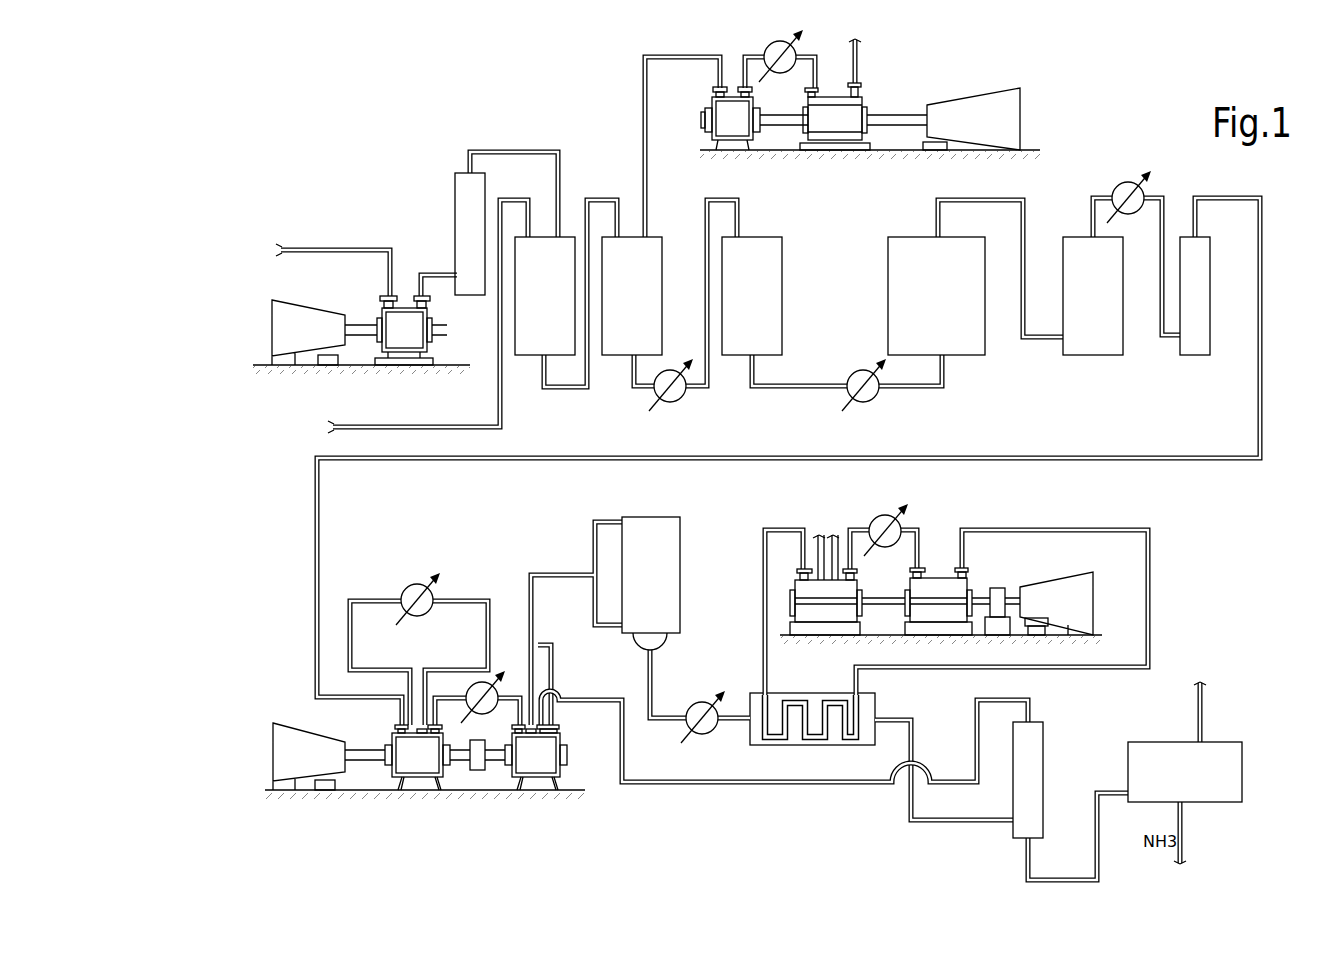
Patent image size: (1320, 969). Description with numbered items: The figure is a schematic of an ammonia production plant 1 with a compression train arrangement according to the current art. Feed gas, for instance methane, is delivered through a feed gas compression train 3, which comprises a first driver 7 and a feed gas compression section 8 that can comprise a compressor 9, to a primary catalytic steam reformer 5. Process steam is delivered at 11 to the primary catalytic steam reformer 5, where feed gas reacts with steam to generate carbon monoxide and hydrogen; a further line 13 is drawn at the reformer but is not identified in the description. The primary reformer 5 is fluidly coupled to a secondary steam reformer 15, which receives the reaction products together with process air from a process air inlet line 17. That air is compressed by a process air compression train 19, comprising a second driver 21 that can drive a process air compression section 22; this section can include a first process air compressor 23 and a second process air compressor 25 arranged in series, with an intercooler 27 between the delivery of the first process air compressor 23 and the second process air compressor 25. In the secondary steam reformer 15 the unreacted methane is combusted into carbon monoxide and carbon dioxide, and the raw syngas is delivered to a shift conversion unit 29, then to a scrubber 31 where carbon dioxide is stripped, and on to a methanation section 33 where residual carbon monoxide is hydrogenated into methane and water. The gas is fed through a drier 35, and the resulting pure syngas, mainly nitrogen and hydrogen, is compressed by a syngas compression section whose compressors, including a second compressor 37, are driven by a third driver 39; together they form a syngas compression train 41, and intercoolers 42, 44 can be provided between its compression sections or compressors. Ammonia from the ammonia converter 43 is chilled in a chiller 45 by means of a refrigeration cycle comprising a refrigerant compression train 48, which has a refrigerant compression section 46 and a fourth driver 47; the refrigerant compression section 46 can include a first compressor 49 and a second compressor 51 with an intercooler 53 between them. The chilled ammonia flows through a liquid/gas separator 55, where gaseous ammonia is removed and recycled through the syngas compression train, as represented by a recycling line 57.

The ammonia production plant 1 is at (343, 145).
The feed gas compression train 3 is at (301, 311).
The primary catalytic steam reformer 5 is at (538, 301).
The first driver 7 is at (327, 305).
The feed gas compression section 8 is at (350, 337).
The compressor 9 is at (425, 330).
The process steam delivery 11 is at (496, 399).
The line 13 is at (567, 390).
The secondary steam reformer 15 is at (622, 301).
The process air inlet line 17 is at (647, 157).
The process air compression train 19 is at (840, 121).
The second driver 21 is at (975, 100).
The process air compression section 22 is at (776, 133).
The first process air compressor 23 is at (848, 106).
The second process air compressor 25 is at (720, 120).
The intercooler 27 is at (772, 47).
The shift conversion unit 29 is at (777, 292).
The scrubber 31 is at (898, 300).
The methanation section 33 is at (1082, 301).
The drier 35 is at (398, 746).
The second compressor 37 is at (557, 755).
The third driver 39 is at (292, 756).
The syngas compression train 41 is at (741, 543).
The intercooler 42 is at (412, 592).
The ammonia converter 43 is at (677, 578).
The intercooler 44 is at (480, 698).
The chiller 45 is at (768, 744).
The refrigerant compression section 46 is at (867, 554).
The fourth driver 47 is at (1072, 589).
The refrigerant compression train 48 is at (945, 553).
The first compressor 49 is at (960, 590).
The second compressor 51 is at (805, 591).
The intercooler 53 is at (887, 539).
The liquid/gas separator 55 is at (1035, 766).
The recycling line 57 is at (838, 781).